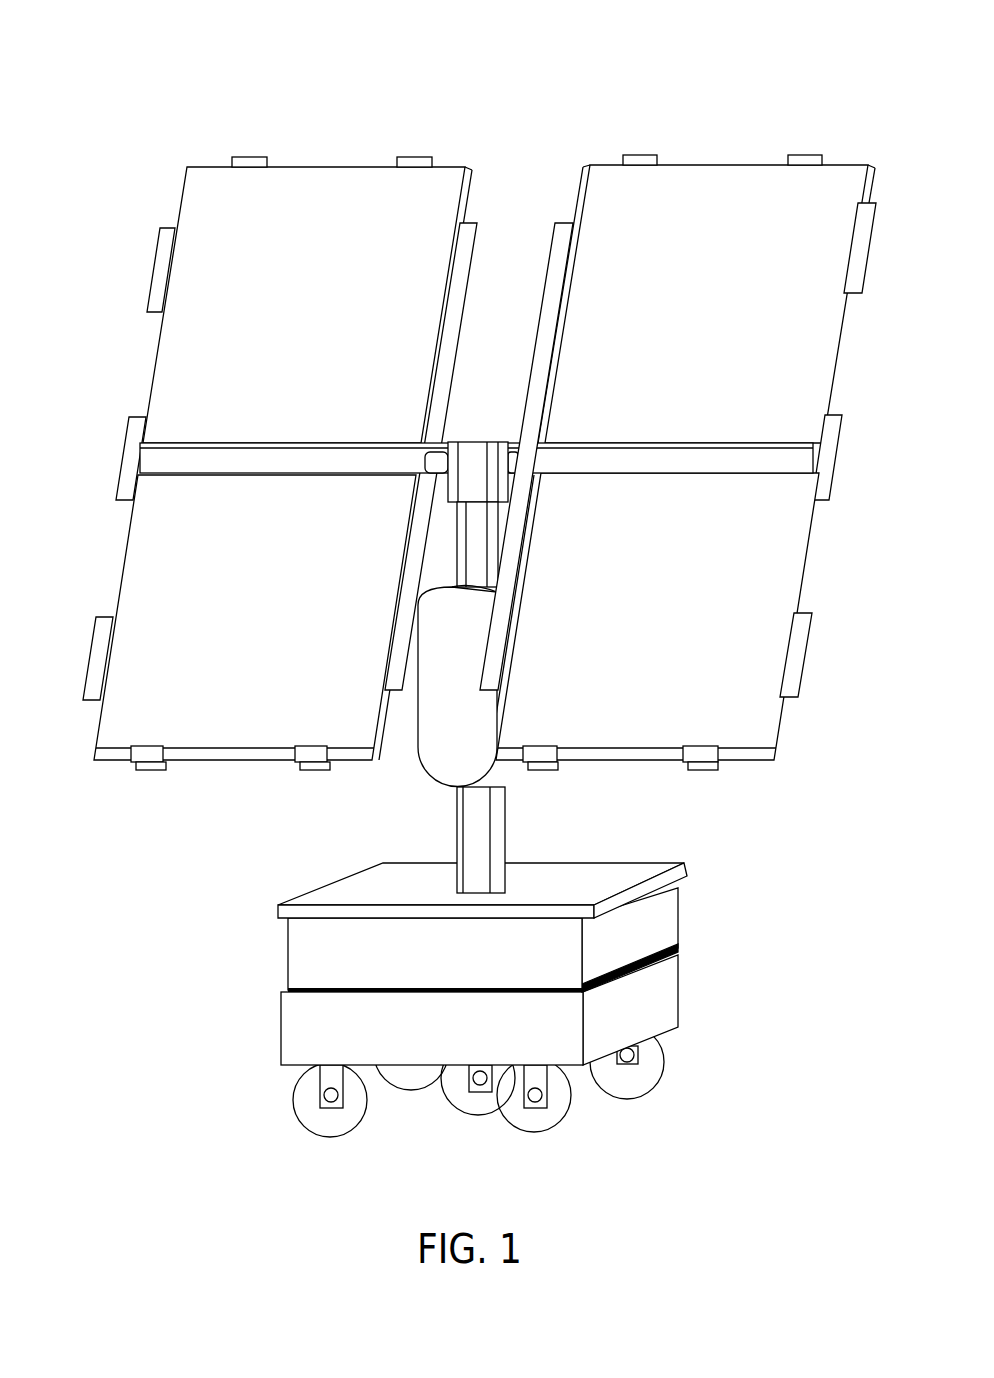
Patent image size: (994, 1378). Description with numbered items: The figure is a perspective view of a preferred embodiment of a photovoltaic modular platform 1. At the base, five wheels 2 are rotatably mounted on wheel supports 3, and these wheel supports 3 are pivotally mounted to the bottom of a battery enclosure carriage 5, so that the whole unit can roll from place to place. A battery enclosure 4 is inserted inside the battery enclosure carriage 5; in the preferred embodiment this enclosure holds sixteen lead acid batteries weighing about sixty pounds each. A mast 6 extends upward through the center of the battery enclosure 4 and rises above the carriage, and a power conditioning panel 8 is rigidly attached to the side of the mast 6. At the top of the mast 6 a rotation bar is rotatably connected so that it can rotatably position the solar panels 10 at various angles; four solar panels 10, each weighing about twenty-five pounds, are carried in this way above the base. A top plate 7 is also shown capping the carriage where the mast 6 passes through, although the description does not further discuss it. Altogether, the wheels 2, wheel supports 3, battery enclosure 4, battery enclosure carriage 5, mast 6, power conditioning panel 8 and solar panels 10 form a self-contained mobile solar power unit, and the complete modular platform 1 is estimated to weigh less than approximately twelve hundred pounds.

The photovoltaic modular platform 1 is at (723, 117).
The wheels 2 is at (313, 1132).
The wheel supports 3 is at (323, 1078).
The battery enclosure 4 is at (287, 946).
The battery enclosure carriage 5 is at (680, 987).
The mast 6 is at (508, 803).
The top plate 7 is at (323, 886).
The power conditioning panel 8 is at (447, 745).
The solar panels 10 is at (282, 300).